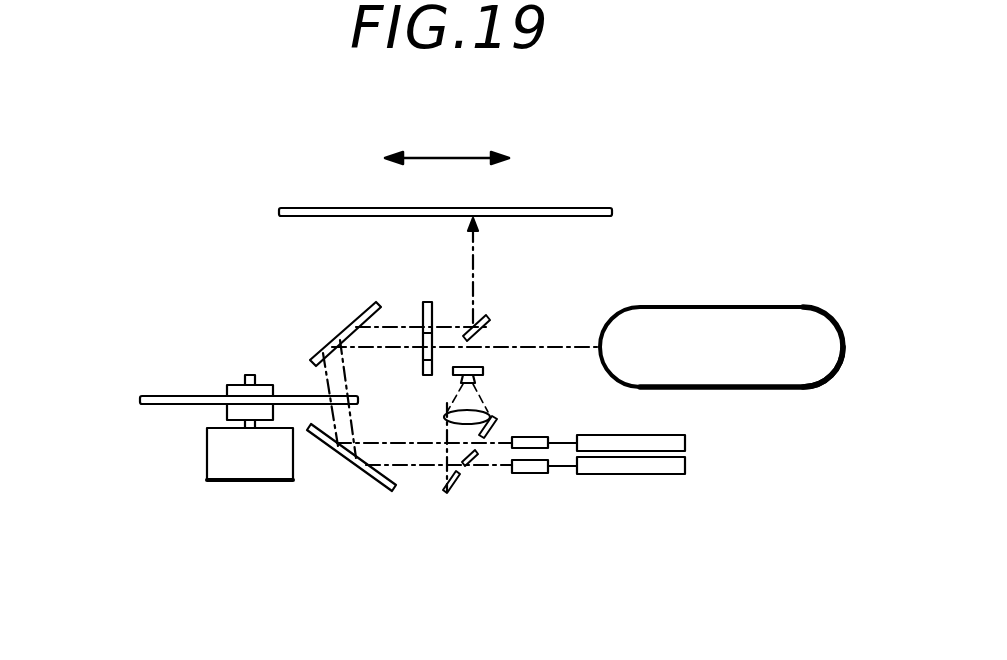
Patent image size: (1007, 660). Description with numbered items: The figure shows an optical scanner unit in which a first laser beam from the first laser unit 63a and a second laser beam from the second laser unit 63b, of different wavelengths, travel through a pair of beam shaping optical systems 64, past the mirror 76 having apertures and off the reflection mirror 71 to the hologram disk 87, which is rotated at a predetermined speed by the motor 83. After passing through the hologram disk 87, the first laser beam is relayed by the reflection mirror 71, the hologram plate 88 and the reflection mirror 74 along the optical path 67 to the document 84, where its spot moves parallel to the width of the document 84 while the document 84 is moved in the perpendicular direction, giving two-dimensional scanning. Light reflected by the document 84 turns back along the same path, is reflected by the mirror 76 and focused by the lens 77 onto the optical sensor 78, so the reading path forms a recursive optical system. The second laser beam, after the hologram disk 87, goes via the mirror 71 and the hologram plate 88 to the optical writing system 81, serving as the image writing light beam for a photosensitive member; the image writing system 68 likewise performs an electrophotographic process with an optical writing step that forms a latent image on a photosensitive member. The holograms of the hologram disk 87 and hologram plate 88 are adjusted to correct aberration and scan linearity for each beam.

The document 84 is at (578, 206).
The hologram plate 88 is at (418, 302).
The reflection mirror 74 is at (490, 322).
The optical path 67 is at (522, 333).
The image writing system 68 is at (738, 307).
The optical writing system 81 is at (822, 383).
The reflection mirror 71 is at (342, 327).
The optical sensor 78 is at (485, 372).
The lens 77 is at (485, 410).
The hologram disk 87 is at (167, 405).
The motor 83 is at (247, 481).
The mirror having apertures 76 is at (462, 480).
The beam shaping optical systems 64 is at (547, 449).
The first laser unit 63a is at (660, 474).
The second laser unit 63b is at (685, 436).